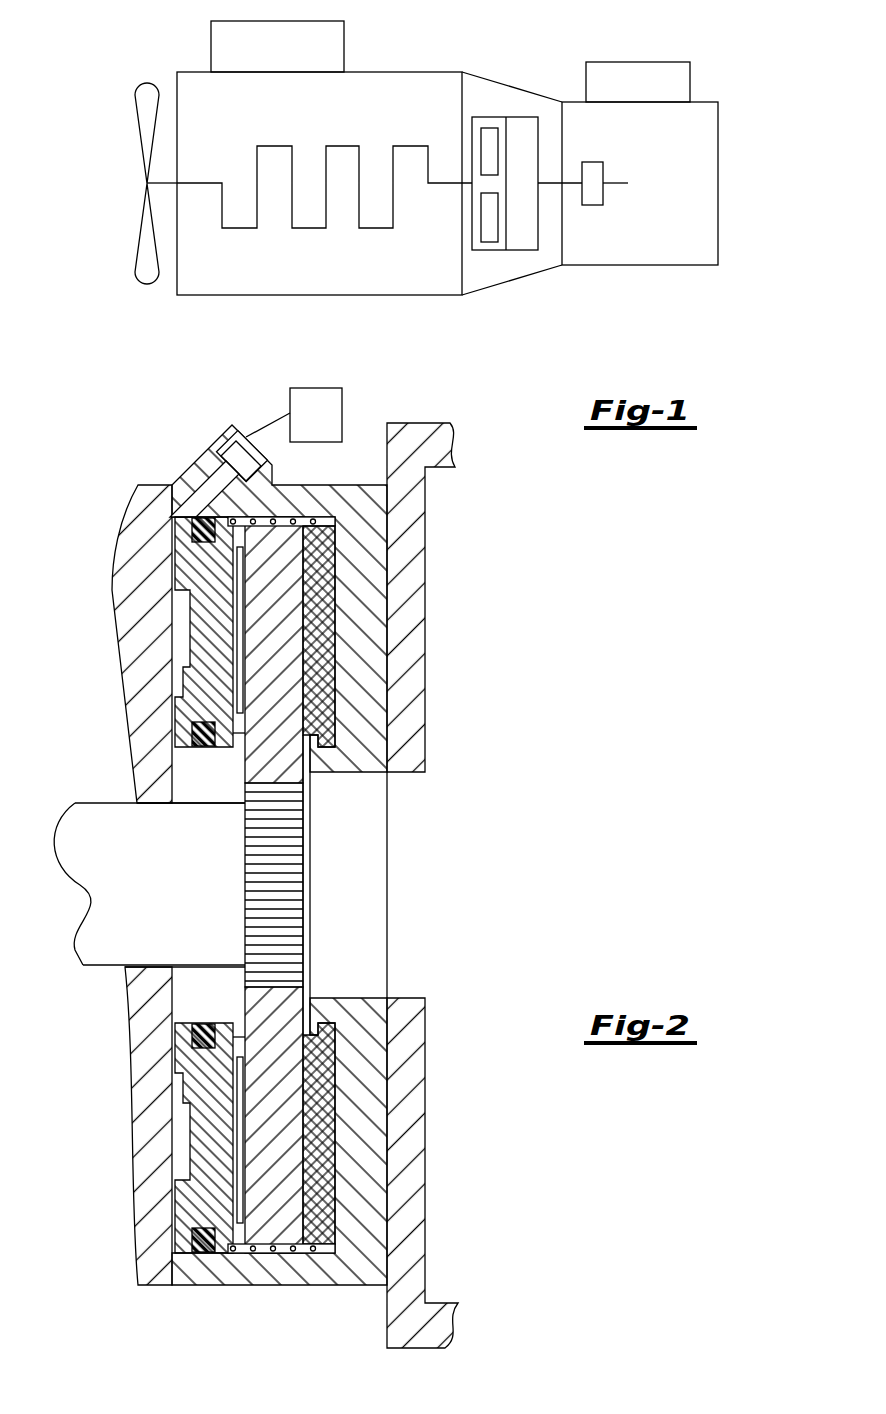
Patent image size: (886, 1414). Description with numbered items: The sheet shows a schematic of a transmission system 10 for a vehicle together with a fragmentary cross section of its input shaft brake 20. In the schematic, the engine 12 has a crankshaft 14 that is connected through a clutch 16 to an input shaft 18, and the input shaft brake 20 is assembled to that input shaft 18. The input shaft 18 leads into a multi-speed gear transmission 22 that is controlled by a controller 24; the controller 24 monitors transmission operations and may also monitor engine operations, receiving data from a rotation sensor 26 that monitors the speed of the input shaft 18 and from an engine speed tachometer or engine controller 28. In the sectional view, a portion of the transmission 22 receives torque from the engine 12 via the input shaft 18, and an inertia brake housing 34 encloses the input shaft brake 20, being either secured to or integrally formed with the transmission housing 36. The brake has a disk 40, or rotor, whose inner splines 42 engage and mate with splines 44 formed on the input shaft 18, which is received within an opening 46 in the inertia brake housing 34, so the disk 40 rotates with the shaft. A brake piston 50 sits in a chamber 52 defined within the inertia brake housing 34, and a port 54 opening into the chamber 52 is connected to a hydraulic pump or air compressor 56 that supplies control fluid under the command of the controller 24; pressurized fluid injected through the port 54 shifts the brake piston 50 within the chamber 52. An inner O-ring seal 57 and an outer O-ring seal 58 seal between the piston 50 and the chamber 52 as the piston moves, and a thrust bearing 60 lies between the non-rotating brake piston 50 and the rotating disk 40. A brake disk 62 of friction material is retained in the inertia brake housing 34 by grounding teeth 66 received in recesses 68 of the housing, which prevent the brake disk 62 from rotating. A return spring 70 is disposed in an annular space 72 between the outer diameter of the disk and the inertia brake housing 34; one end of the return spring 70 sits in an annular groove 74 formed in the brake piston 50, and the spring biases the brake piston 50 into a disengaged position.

In FIG. 1, the transmission system 10 is at (684, 307).
In FIG. 1, the engine 12 is at (192, 98).
In FIG. 1, the crankshaft 14 is at (438, 187).
In FIG. 1, the clutch 16 is at (491, 137).
In FIG. 1, the input shaft 18 is at (548, 187).
In FIG. 2, the input shaft 18 is at (93, 950).
In FIG. 1, the input shaft brake 20 is at (530, 232).
In FIG. 2, the input shaft brake 20 is at (238, 902).
In FIG. 1, the multi-speed gear transmission 22 is at (718, 137).
In FIG. 2, the multi-speed gear transmission 22 is at (418, 418).
In FIG. 1, the controller 24 is at (668, 73).
In FIG. 1, the rotation sensor 26 is at (600, 173).
In FIG. 1, the engine controller 28 is at (345, 48).
In FIG. 2, the inertia brake housing 34 is at (216, 1328).
In FIG. 2, the transmission housing 36 is at (415, 1012).
In FIG. 2, the disk 40 is at (285, 768).
In FIG. 2, the splines 42 is at (293, 868).
In FIG. 2, the splines 44 is at (295, 885).
In FIG. 2, the opening 46 is at (140, 820).
In FIG. 2, the brake piston 50 is at (180, 570).
In FIG. 2, the chamber 52 is at (180, 626).
In FIG. 2, the port 54 is at (243, 441).
In FIG. 2, the hydraulic pump or air compressor 56 is at (318, 388).
In FIG. 2, the inner O-ring seal 57 is at (207, 744).
In FIG. 2, the outer O-ring seal 58 is at (198, 520).
In FIG. 2, the thrust bearing 60 is at (238, 652).
In FIG. 2, the brake disk 62 is at (332, 625).
In FIG. 2, the grounding teeth 66 is at (337, 520).
In FIG. 2, the recesses 68 is at (320, 517).
In FIG. 2, the return spring 70 is at (252, 1254).
In FIG. 2, the annular space 72 is at (283, 1254).
In FIG. 2, the annular groove 74 is at (222, 1252).